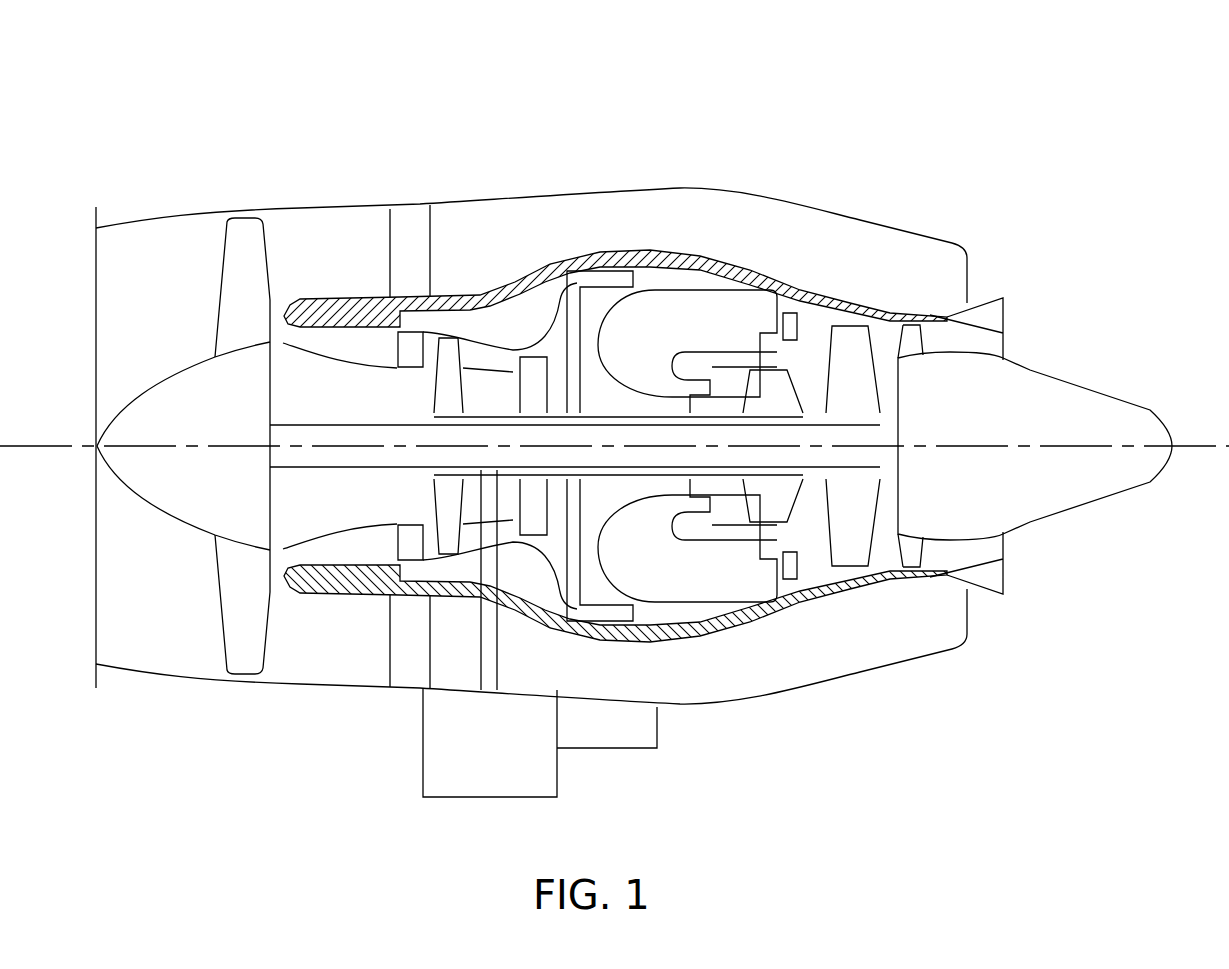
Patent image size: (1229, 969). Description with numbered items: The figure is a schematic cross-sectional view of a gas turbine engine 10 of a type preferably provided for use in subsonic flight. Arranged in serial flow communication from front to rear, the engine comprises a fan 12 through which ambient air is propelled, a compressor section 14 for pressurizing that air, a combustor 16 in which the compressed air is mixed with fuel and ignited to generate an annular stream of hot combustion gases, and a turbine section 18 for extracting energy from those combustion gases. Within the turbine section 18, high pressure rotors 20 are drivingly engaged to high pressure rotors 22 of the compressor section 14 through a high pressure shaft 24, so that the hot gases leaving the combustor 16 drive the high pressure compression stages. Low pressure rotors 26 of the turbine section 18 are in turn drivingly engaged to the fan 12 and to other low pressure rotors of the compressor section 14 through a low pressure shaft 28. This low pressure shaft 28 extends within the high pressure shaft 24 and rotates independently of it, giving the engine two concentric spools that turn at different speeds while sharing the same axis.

The gas turbine engine 10 is at (847, 118).
The fan 12 is at (237, 593).
The compressor section 14 is at (480, 352).
The combustor 16 is at (690, 312).
The turbine section 18 is at (817, 510).
The high pressure rotor 20 is at (790, 380).
The high pressure rotor 22 is at (548, 378).
The high pressure shaft 24 is at (693, 387).
The low pressure rotor 26 is at (800, 383).
The low pressure shaft 28 is at (330, 470).